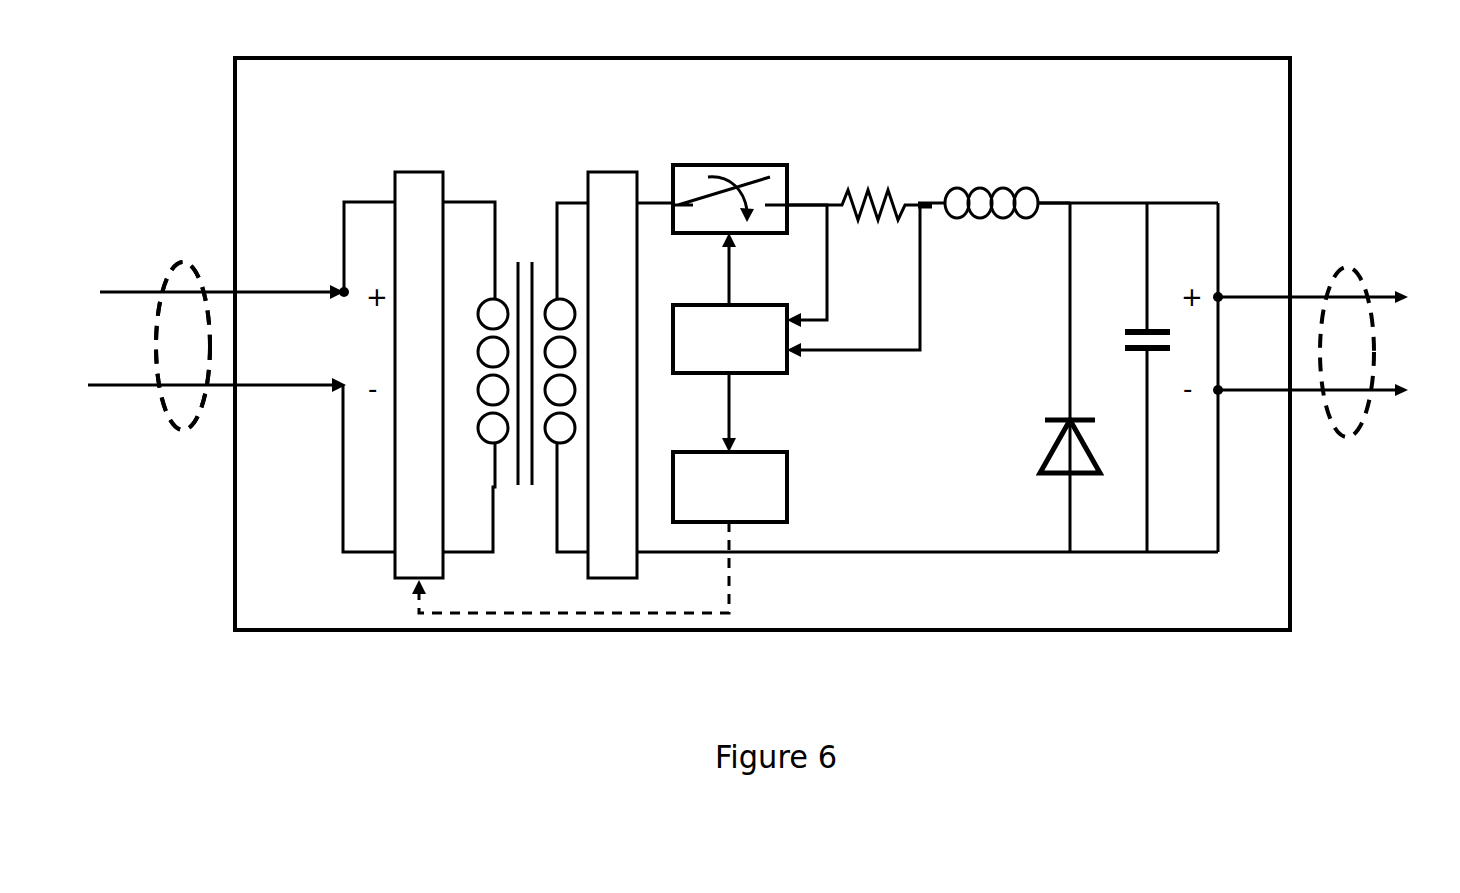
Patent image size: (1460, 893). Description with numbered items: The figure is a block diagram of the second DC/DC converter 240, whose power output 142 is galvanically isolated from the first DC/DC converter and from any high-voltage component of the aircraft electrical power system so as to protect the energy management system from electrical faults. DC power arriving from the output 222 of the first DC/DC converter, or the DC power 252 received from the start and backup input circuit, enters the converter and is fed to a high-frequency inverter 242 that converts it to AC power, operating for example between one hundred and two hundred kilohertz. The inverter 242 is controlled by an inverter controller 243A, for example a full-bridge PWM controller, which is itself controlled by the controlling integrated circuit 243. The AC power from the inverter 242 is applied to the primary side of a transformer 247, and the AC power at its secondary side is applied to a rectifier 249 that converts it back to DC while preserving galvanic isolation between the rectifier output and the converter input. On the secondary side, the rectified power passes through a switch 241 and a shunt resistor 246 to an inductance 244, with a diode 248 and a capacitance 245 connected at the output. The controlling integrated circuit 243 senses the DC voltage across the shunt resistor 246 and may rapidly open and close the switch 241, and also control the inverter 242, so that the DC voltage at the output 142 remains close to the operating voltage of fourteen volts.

The second DC/DC converter 240 is at (967, 58).
The output of the first DC/DC converter 222 is at (197, 270).
The DC power from the start and backup input circuit 252 is at (183, 346).
The high-frequency inverter 242 is at (422, 172).
The transformer 247 is at (523, 188).
The rectifier 249 is at (620, 172).
The switch 241 is at (743, 165).
The controlling integrated circuit 243 is at (757, 373).
The inverter controller 243A is at (787, 468).
The shunt resistor 246 is at (870, 190).
The inductance 244 is at (965, 225).
The diode 248 is at (1045, 452).
The capacitance 245 is at (1165, 330).
The power output 142 is at (1347, 267).